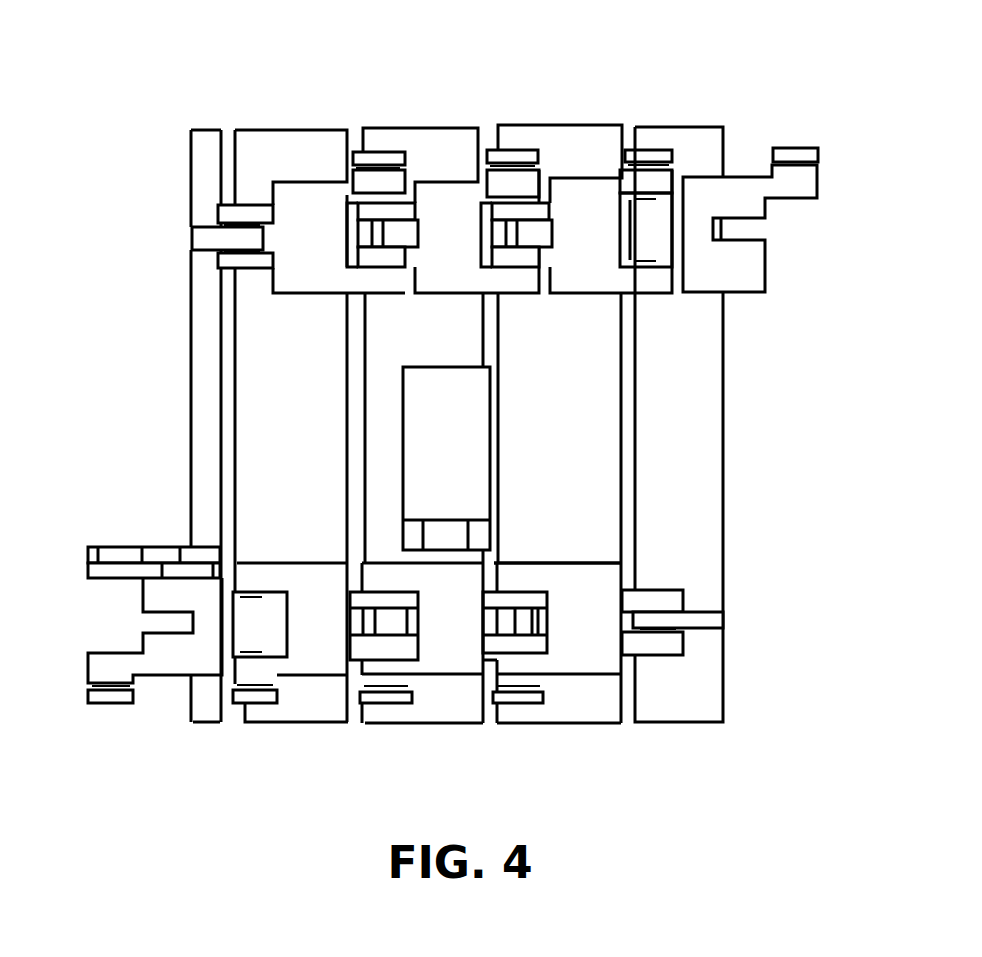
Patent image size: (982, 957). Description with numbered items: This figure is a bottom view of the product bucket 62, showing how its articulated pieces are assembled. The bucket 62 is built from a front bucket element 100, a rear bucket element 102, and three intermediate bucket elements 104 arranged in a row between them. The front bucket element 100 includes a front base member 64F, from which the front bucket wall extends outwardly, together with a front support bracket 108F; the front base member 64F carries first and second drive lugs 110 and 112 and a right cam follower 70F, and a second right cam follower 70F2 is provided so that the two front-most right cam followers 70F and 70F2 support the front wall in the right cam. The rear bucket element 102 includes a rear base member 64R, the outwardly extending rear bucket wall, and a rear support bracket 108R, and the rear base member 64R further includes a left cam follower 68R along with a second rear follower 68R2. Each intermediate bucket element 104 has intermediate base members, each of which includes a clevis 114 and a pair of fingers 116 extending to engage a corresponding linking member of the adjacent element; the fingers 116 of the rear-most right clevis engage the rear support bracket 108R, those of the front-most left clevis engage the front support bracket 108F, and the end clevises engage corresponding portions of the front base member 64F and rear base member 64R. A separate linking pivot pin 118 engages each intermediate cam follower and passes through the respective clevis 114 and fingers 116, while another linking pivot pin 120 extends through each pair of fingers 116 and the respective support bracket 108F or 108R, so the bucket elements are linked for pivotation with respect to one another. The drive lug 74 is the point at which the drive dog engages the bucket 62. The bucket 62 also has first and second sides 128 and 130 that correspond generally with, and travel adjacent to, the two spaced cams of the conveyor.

The product bucket 62 is at (424, 66).
The front base member 64F is at (157, 686).
The rear base member 64R is at (740, 177).
The left cam follower 68R is at (797, 148).
The second rear stud 68R2 is at (656, 150).
The right cam follower 70F is at (128, 706).
The right cam follower 70F2 is at (247, 710).
The drive lug 74 is at (425, 534).
The front bucket element 100 is at (203, 732).
The rear bucket element 102 is at (683, 732).
The intermediate bucket element 104 is at (309, 732).
The front support bracket 108F is at (207, 222).
The rear support bracket 108R is at (707, 607).
The first drive lug 110 is at (180, 547).
The second drive lug 112 is at (119, 547).
The clevis 114 is at (521, 563).
The fingers 116 is at (254, 205).
The linking pivot pin 118 is at (395, 623).
The linking pivot pin 120 is at (237, 268).
The first side 128 is at (440, 128).
The second side 130 is at (390, 724).